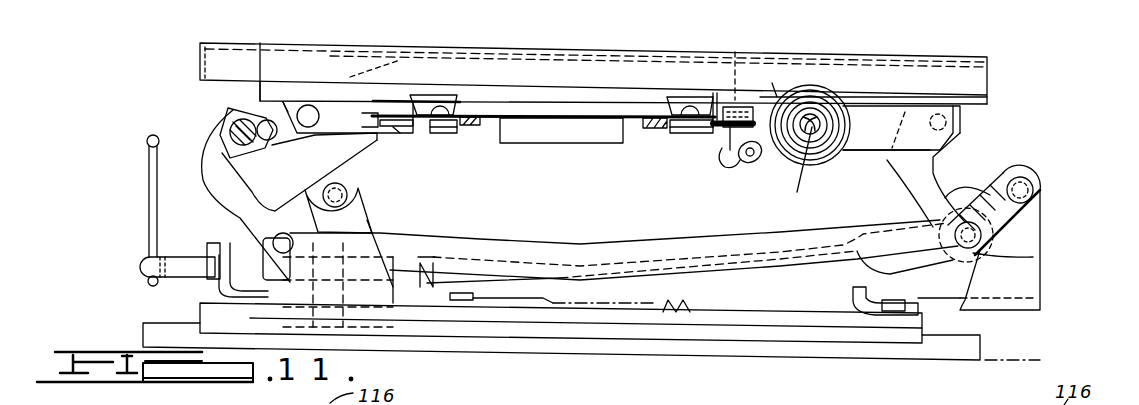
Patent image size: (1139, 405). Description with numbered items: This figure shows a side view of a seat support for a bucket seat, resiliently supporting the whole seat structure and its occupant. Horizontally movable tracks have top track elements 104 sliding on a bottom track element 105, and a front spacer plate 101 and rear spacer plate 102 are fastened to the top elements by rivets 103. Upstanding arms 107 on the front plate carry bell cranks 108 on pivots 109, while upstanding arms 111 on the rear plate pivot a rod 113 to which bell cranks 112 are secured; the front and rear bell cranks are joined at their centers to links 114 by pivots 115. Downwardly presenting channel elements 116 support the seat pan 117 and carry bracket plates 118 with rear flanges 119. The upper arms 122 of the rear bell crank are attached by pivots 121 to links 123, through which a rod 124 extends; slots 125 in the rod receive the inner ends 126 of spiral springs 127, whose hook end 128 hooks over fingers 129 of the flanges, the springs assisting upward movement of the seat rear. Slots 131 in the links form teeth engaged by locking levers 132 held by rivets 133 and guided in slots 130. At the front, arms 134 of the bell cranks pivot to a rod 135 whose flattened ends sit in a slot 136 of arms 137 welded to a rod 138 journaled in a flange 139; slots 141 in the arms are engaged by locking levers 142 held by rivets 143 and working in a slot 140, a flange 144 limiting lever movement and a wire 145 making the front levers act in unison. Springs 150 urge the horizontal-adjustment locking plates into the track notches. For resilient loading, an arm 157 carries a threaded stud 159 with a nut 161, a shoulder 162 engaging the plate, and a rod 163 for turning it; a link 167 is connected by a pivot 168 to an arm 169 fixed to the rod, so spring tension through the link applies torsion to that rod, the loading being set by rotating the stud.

The front spacer plate 101 is at (215, 280).
The rear spacer plate 102 is at (945, 307).
The rivets 103 is at (900, 293).
The top track elements 104 is at (200, 311).
The bottom track element 105 is at (143, 334).
The upstanding arms 107 is at (367, 213).
The bell cranks 108 is at (250, 197).
The pivots 109 is at (337, 190).
The upstanding arms 111 is at (1033, 243).
The bell cranks 112 is at (935, 180).
The rod 113 is at (1035, 180).
The links 114 is at (543, 250).
The pivots 115 is at (267, 253).
The channel elements 116 is at (577, 92).
The seat pan 117 is at (977, 57).
The bracket plates 118 is at (493, 118).
The flanges 119 is at (850, 136).
The pivots 121 is at (960, 117).
The upper arms 122 is at (960, 129).
The links 123 is at (853, 152).
The rod 124 is at (823, 117).
The slots 125 is at (810, 115).
The inner ends 126 is at (793, 170).
The spiral springs 127 is at (772, 83).
The hook end 128 is at (735, 160).
The fingers 129 is at (752, 165).
The slots 130 is at (735, 130).
The slots 131 is at (743, 50).
The locking levers 132 is at (713, 128).
The rivets 133 is at (673, 99).
The arms 134 is at (710, 99).
The rod 135 is at (243, 148).
The slot 136 is at (247, 120).
The arms 137 is at (313, 143).
The rod 138 is at (305, 105).
The flange 139 is at (333, 105).
The slot 140 is at (397, 128).
The slots 141 is at (405, 44).
The locking levers 142 is at (432, 118).
The rivets 143 is at (452, 100).
The flange 144 is at (560, 133).
The wire 145 is at (415, 97).
The springs 150 is at (680, 305).
The arm 157 is at (250, 290).
The threaded stud 159 is at (170, 257).
The nut 161 is at (267, 266).
The shoulder 162 is at (213, 258).
The rod 163 is at (148, 158).
The link 167 is at (870, 270).
The pivot 168 is at (957, 265).
The arm 169 is at (1033, 257).